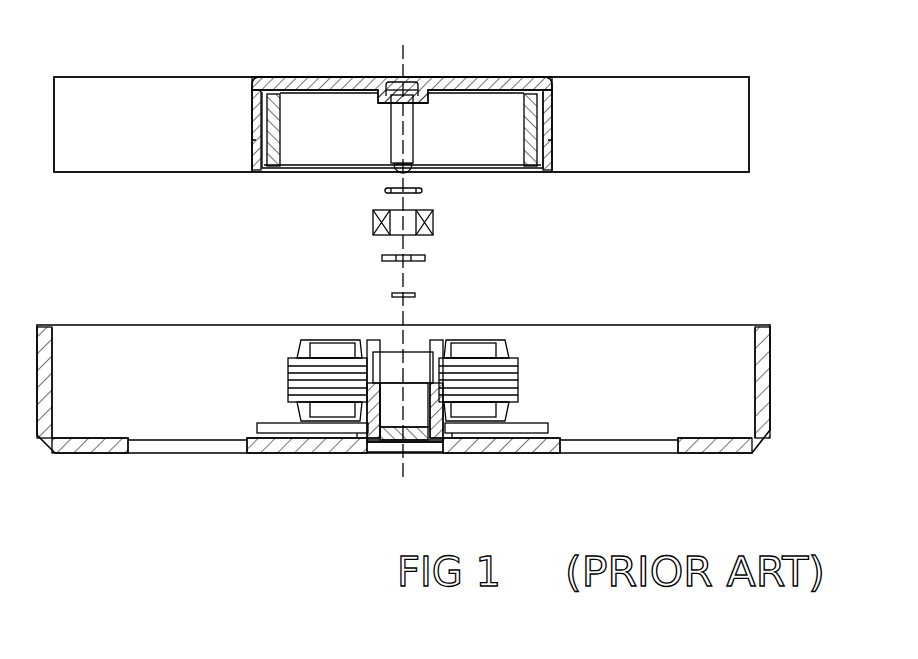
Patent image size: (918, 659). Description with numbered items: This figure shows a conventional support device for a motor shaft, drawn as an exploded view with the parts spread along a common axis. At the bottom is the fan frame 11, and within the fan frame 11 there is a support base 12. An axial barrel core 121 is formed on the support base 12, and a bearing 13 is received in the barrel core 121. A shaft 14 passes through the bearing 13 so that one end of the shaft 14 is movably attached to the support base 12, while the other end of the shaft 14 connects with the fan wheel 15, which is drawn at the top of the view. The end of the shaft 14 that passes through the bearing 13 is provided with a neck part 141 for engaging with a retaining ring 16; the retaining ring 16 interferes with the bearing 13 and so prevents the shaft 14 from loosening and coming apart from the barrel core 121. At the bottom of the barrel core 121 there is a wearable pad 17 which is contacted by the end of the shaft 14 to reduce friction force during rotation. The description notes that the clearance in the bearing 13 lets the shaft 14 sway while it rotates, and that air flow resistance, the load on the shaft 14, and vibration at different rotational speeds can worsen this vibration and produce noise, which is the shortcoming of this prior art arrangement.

The fan frame 11 is at (760, 322).
The support base 12 is at (547, 452).
The barrel core 121 is at (442, 348).
The bearing 13 is at (374, 218).
The shaft 14 is at (407, 112).
The neck part 141 is at (410, 170).
The fan wheel 15 is at (395, 78).
The retaining ring 16 is at (384, 257).
The wearable pad 17 is at (393, 294).